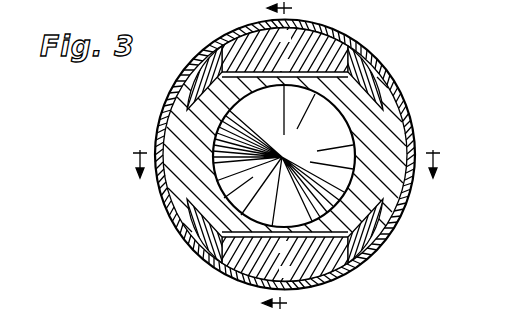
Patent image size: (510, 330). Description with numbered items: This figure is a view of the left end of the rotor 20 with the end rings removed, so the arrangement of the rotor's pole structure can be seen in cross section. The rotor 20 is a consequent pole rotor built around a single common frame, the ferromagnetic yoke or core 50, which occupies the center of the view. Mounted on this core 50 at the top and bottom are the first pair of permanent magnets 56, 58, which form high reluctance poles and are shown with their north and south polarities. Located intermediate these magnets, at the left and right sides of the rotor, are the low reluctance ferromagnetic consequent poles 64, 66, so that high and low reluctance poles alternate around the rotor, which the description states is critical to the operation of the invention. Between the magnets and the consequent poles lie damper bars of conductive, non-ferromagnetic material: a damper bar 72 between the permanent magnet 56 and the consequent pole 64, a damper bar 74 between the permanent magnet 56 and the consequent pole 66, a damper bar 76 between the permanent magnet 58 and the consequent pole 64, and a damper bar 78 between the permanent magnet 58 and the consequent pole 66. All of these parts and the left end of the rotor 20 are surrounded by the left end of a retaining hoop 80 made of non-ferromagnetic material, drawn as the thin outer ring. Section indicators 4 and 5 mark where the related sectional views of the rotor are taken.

The section line 4- 4 is at (282, 157).
The section line 5- 5 is at (286, 157).
The rotor 20 is at (176, 250).
The ferromagnetic yoke or core 50 is at (240, 95).
The permanent magnet 56 is at (345, 45).
The permanent magnet 58 is at (325, 268).
The consequent pole 64 is at (174, 182).
The consequent pole 66 is at (388, 132).
The damper bar 72 is at (208, 60).
The damper bar 74 is at (374, 70).
The damper bar 76 is at (212, 256).
The damper bar 78 is at (364, 256).
The retaining hoop 80 is at (176, 99).